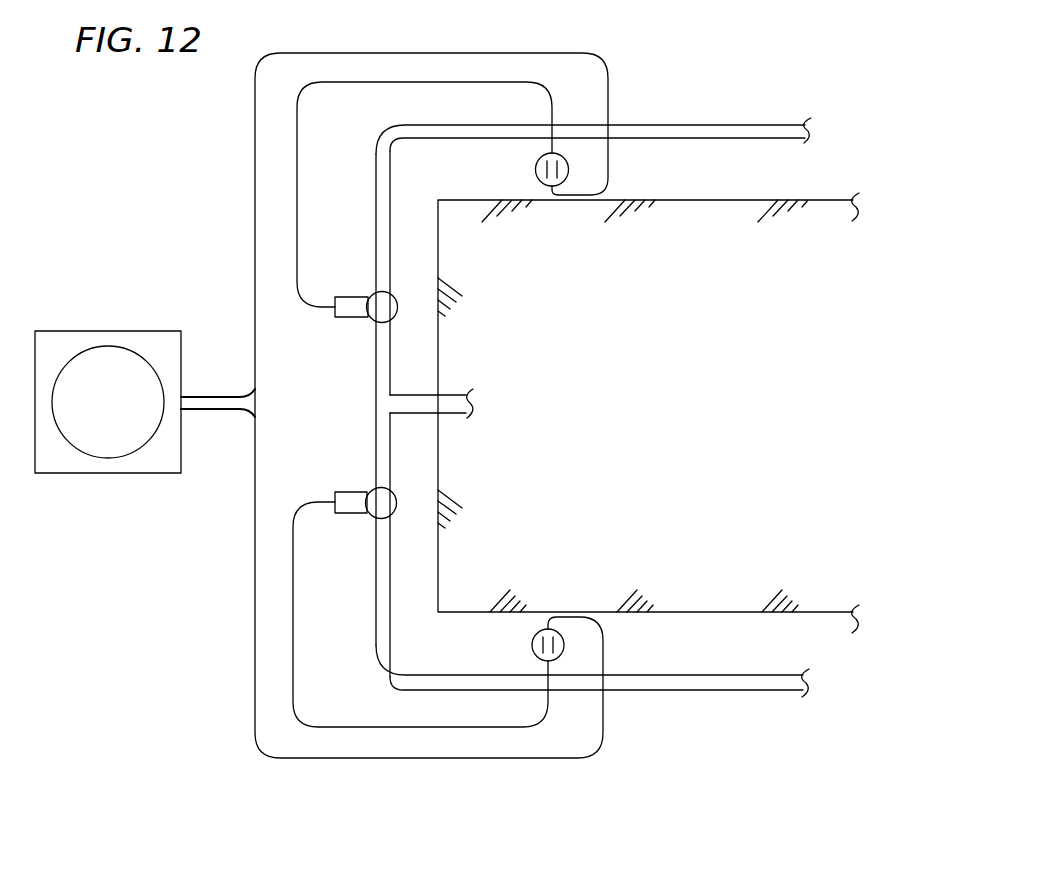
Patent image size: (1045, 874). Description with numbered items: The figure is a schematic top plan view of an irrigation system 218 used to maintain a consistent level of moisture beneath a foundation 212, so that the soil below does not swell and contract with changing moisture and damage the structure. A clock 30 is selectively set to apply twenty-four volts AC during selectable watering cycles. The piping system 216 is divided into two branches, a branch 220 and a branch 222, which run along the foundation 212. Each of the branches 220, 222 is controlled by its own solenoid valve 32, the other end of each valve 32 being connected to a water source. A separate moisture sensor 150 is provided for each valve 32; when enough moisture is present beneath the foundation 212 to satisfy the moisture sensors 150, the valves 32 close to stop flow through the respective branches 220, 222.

The clock 30 is at (180, 363).
The solenoid valve 32 is at (395, 300).
The moisture sensor 150 is at (535, 170).
The foundation 212 is at (745, 200).
The piping system 216 is at (375, 397).
The irrigation system 218 is at (358, 183).
The branch 220 is at (690, 128).
The branch 222 is at (682, 691).